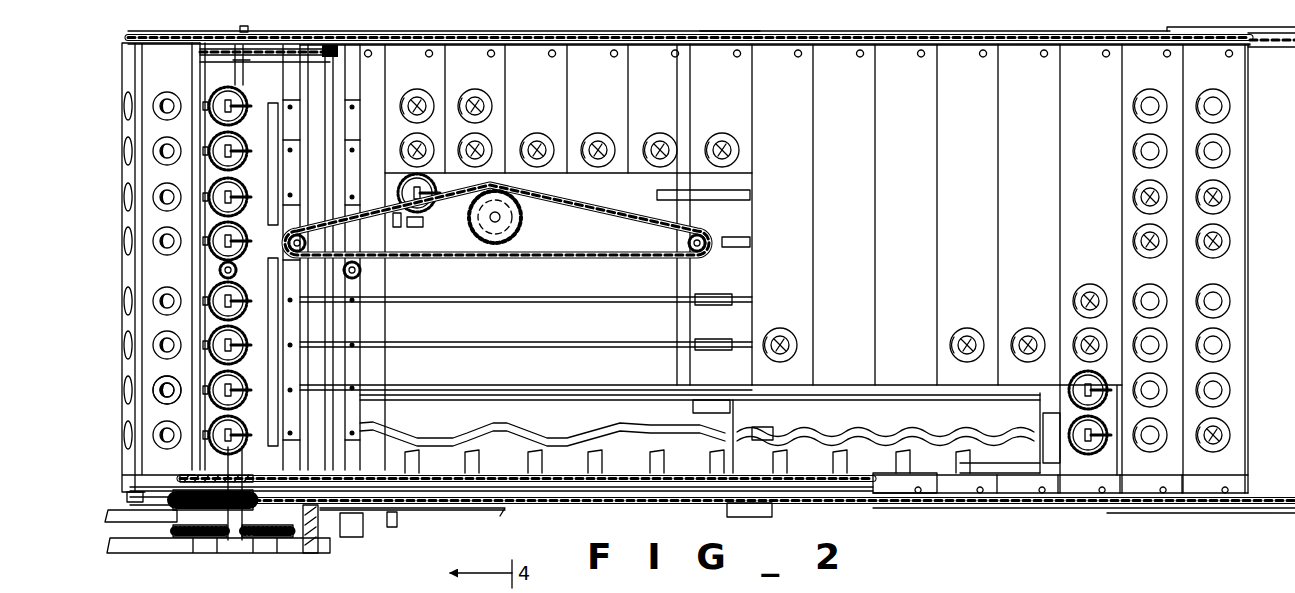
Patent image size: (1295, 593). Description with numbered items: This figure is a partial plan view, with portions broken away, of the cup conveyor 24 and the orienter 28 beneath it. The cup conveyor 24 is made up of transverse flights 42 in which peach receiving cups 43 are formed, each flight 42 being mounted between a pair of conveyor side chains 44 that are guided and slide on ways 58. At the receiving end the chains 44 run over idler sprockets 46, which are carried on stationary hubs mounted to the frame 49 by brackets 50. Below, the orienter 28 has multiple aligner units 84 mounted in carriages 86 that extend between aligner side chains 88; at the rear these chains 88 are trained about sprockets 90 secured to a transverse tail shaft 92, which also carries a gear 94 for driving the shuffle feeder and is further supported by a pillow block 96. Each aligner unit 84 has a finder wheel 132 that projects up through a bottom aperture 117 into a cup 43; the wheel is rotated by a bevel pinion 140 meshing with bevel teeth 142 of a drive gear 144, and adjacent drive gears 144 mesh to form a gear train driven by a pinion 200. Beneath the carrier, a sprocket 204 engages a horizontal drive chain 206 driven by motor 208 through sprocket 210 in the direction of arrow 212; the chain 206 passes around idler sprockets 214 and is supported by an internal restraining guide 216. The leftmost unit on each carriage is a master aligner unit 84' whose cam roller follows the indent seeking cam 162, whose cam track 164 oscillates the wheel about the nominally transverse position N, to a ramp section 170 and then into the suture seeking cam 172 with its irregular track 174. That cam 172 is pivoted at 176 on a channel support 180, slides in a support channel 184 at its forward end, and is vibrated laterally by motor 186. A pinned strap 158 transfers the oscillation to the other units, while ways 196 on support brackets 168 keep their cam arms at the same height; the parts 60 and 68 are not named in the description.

The cup conveyor 24 is at (725, 30).
The orienter 28 is at (580, 392).
The transverse flight 42 is at (142, 72).
The peach receiving cup 43 is at (530, 140).
The conveyor side chain 44 is at (375, 31).
The idler sprocket 46 is at (245, 48).
The frame 49 is at (133, 558).
The bracket 50 is at (178, 518).
The way 58 is at (1293, 44).
The lower support plate 60 is at (470, 512).
The bracket 68 is at (385, 518).
The aligner unit 84 is at (161, 248).
The master aligner unit 84' is at (159, 435).
The carriage 86 is at (233, 73).
The aligner side chain 88 is at (300, 45).
The sprocket 90 is at (240, 42).
The tail shaft 92 is at (243, 75).
The gear 94 is at (293, 537).
The pillow block 96 is at (250, 543).
The bottom aperture 117 is at (165, 197).
The finder wheel 132 is at (255, 352).
The bevel pinion 140 is at (300, 365).
The bevel teeth 142 is at (277, 373).
The drive gear 144 is at (205, 117).
The pinned strap 158 is at (430, 78).
The indent seeking cam 162 is at (493, 400).
The cam track 164 is at (412, 437).
The support bracket 168 is at (675, 320).
The ramp section 170 is at (712, 392).
The suture seeking cam 172 is at (885, 385).
The cam track 174 is at (885, 424).
The pivot 176 is at (1048, 435).
The channel support 180 is at (1040, 462).
The support channel 184 is at (770, 428).
The motor 186 is at (735, 492).
The way 196 is at (745, 240).
The pinion 200 is at (222, 270).
The sprocket 204 is at (356, 272).
The horizontal drive chain 206 is at (625, 265).
The motor 208 is at (520, 215).
The sprocket 210 is at (520, 197).
The arrow 212 is at (523, 240).
The idler sprocket 214 is at (292, 232).
The internal restraining guide 216 is at (660, 265).
The nominally transverse position N is at (430, 140).